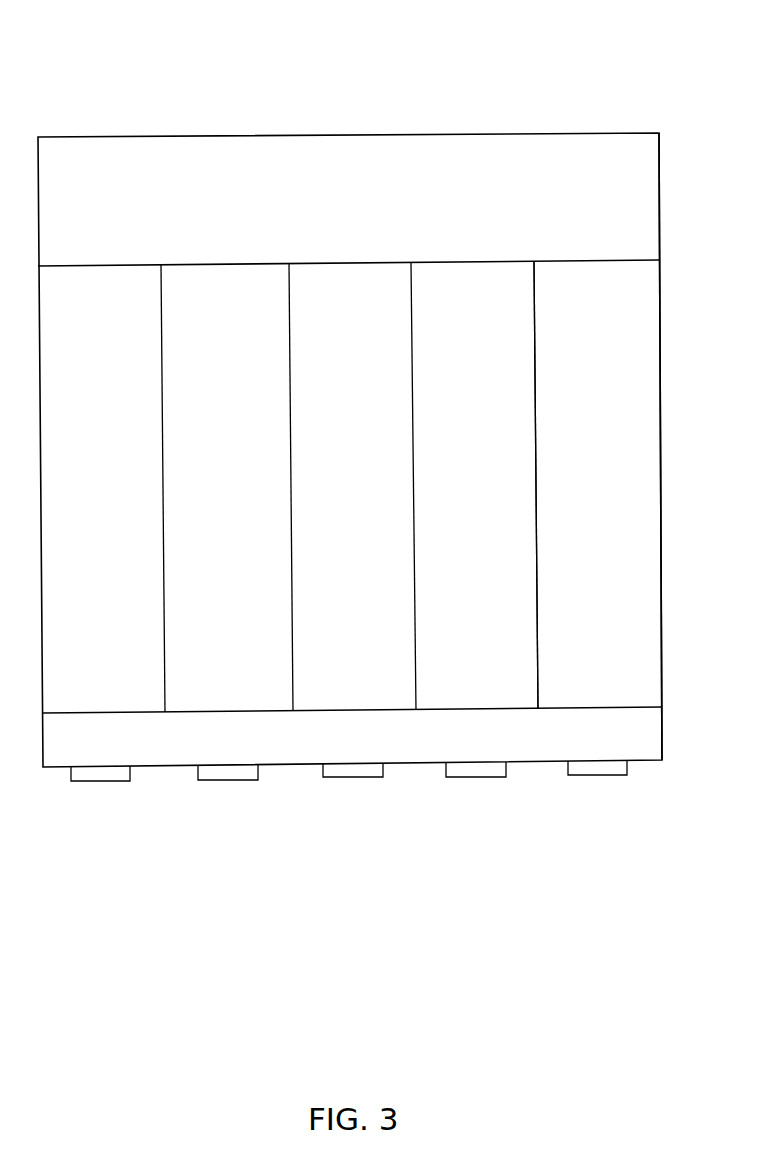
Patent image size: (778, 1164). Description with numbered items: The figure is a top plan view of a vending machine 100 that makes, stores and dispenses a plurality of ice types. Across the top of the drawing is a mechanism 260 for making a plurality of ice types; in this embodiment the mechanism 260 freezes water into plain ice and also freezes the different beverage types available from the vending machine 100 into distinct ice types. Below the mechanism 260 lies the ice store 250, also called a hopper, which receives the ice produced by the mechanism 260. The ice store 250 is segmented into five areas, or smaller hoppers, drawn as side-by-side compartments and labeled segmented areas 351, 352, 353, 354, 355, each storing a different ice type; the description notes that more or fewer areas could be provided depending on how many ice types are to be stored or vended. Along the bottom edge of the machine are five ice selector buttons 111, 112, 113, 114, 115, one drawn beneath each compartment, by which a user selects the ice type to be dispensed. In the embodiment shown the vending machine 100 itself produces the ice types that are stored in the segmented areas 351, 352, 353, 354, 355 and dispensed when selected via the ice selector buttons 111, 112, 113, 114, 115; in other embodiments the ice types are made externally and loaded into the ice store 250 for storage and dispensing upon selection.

The vending machine 100 is at (140, 48).
The ice store 250 is at (661, 392).
The mechanism for making a plurality of ice types 260 is at (562, 132).
The segmented area 351 is at (110, 340).
The segmented area 352 is at (239, 338).
The segmented area 353 is at (369, 336).
The segmented area 354 is at (486, 335).
The segmented area 355 is at (611, 333).
The ice selector button 111 is at (121, 782).
The ice selector button 112 is at (252, 782).
The ice selector button 113 is at (377, 779).
The ice selector button 114 is at (500, 779).
The ice selector button 115 is at (617, 777).